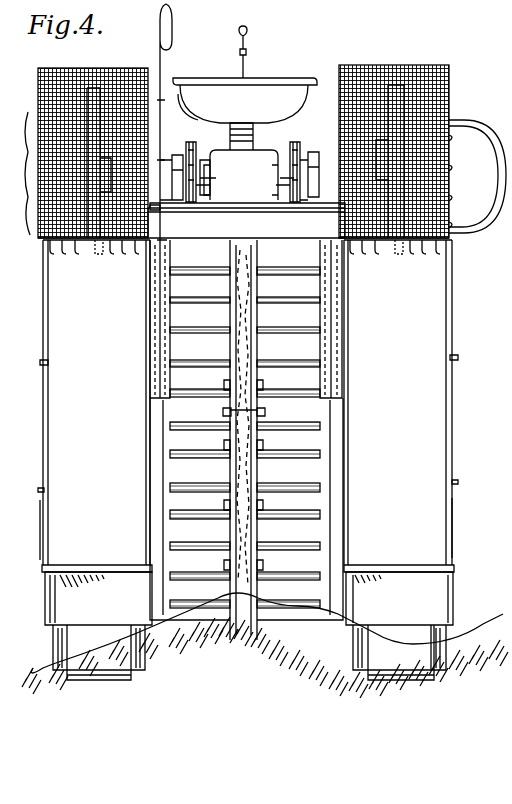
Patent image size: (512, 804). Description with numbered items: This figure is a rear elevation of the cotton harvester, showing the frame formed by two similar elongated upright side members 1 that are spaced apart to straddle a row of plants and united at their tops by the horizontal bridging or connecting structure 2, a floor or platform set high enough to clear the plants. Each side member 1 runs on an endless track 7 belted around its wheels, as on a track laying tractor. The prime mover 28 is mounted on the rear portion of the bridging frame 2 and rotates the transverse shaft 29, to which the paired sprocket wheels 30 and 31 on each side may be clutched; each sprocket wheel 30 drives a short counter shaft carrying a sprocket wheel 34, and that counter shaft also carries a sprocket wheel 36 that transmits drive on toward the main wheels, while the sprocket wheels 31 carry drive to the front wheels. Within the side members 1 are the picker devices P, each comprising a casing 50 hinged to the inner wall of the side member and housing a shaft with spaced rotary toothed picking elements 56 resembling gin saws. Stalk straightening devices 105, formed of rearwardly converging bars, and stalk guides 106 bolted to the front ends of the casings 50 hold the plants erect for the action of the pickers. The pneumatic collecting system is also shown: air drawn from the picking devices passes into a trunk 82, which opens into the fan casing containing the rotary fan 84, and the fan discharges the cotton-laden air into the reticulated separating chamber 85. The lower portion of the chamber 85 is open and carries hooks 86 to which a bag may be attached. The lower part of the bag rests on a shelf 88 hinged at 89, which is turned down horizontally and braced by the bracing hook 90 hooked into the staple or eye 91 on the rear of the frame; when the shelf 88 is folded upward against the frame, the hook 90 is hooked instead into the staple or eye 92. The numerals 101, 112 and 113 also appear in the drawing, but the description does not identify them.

The handle rod 101 is at (170, 50).
The hopper lever 112 is at (262, 38).
The feed hopper 113 is at (270, 78).
The hooks 86 is at (70, 255).
The rotary fan 84 is at (100, 120).
The reticulated separating chamber 85 is at (376, 78).
The sprocket wheel 30 is at (195, 130).
The sprocket wheel 31 is at (178, 153).
The shaft 29 is at (205, 158).
The prime mover 28 is at (256, 150).
The sprocket wheel 34 is at (270, 190).
The rotary toothed picking element 56 is at (168, 216).
The horizontal bridging or connecting structure 2 is at (256, 224).
The sprocket wheel 36 is at (305, 218).
The trunk 82 is at (30, 236).
The side member 1 is at (40, 412).
The staple or eye 92 is at (38, 365).
The stalk guide 106 is at (266, 412).
The stalk straightening device 105 is at (270, 430).
The casing 50 is at (244, 448).
The staple or eye 91 is at (38, 490).
The bracing hook 90 is at (38, 520).
The hinge 89 is at (52, 568).
The shelf 88 is at (112, 572).
The endless track 7 is at (414, 648).
The picker devices P is at (236, 513).